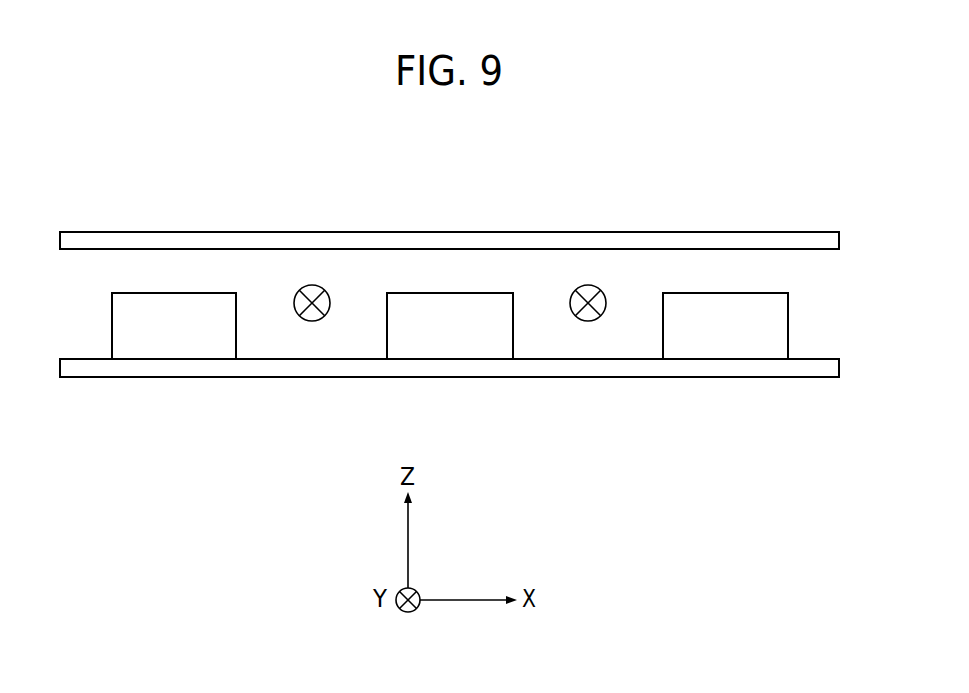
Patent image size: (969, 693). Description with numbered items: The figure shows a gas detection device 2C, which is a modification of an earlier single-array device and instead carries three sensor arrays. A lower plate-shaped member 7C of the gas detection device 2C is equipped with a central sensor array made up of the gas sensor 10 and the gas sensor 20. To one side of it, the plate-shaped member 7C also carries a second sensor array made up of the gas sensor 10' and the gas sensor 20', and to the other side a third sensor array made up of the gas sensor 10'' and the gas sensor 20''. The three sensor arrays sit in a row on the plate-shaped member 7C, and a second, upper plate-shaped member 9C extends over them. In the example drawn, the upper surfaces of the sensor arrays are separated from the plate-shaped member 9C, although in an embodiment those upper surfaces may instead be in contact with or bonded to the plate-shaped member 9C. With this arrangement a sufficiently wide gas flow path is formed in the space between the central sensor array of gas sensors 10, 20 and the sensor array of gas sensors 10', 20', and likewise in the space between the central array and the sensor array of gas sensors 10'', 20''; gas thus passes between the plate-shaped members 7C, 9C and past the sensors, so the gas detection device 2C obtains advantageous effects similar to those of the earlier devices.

The gas detection device 2C is at (336, 189).
The plate-shaped member 9C is at (768, 231).
The plate-shaped member 7C is at (775, 377).
The gas sensor 10 is at (450, 326).
The gas sensor 20 is at (450, 326).
The gas sensor 10' is at (725, 326).
The gas sensor 20' is at (725, 326).
The gas sensor 10'' is at (174, 326).
The gas sensor 20'' is at (174, 326).